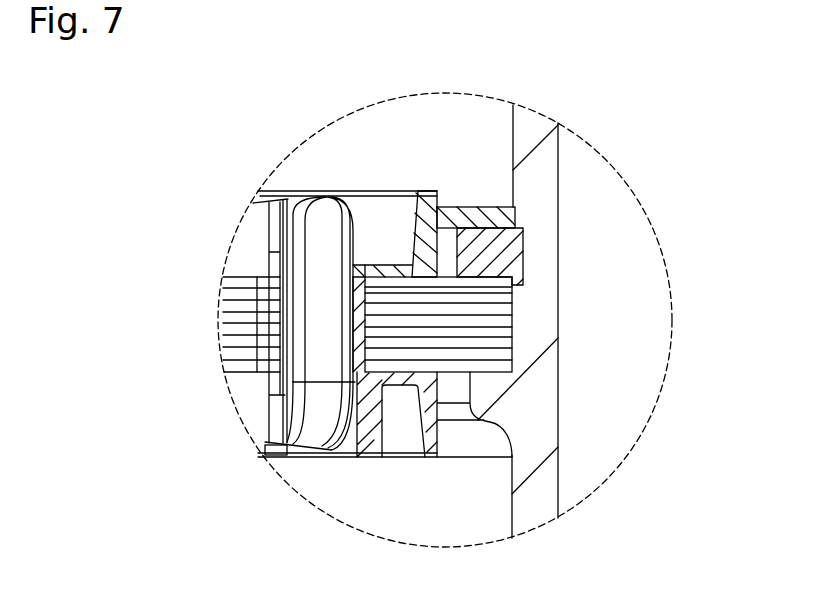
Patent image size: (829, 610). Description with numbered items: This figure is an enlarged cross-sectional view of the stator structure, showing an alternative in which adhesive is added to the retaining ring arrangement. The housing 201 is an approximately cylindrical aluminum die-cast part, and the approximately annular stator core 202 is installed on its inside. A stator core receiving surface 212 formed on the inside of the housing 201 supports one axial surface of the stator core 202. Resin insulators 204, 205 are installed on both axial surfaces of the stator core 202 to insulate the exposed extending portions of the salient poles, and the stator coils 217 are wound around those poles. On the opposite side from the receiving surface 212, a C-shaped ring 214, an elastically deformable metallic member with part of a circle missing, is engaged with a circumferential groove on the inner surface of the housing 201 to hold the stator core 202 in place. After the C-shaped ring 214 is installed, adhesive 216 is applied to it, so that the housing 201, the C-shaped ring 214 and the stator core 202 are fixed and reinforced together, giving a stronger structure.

The housing 201 is at (535, 381).
The stator core 202 is at (488, 317).
The insulator 204 is at (373, 443).
The insulator 205 is at (428, 191).
The stator core receiving surface 212 is at (488, 368).
The C-shaped ring 214 is at (492, 253).
The adhesive 216 is at (487, 208).
The stator coil 217 is at (312, 217).